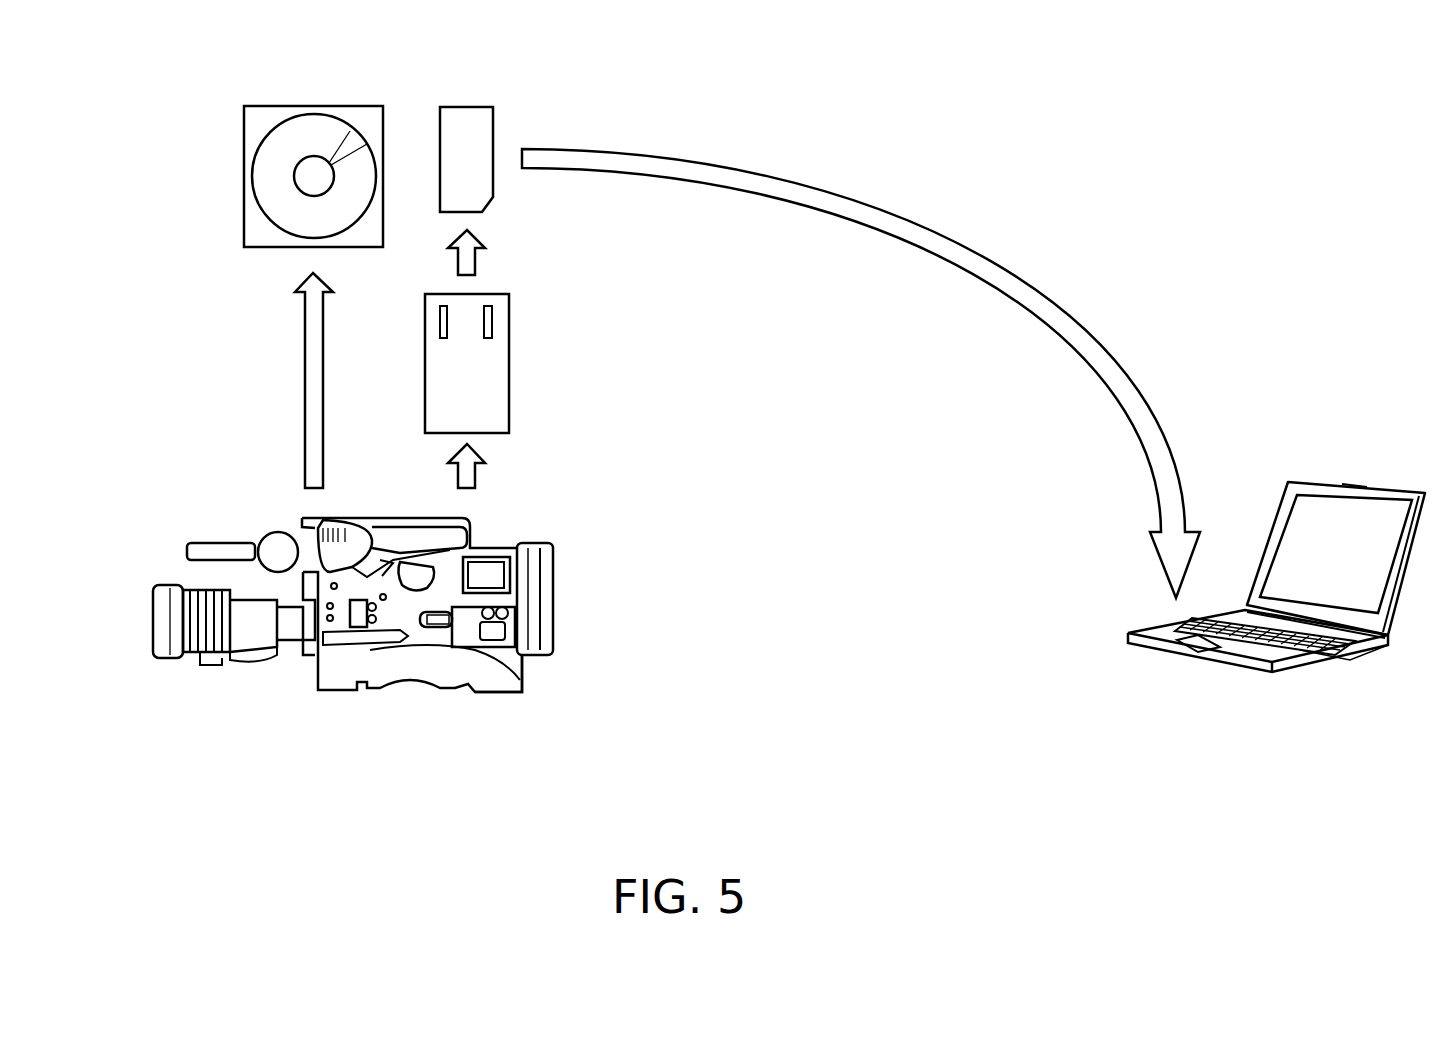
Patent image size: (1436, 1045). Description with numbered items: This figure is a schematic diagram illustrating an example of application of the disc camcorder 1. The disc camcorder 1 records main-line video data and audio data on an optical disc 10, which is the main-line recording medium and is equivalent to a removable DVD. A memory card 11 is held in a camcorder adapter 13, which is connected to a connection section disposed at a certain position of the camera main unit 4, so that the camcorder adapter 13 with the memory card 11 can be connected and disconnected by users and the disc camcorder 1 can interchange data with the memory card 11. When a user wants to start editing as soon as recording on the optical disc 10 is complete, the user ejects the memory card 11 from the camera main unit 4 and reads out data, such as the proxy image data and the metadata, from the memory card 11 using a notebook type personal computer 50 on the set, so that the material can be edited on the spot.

The disc camcorder 1 is at (382, 777).
The camera main unit 4 is at (543, 713).
The optical disc 10 is at (313, 40).
The memory card 11 is at (525, 95).
The camcorder adapter 13 is at (542, 342).
The notebook type personal computer 50 is at (1230, 747).